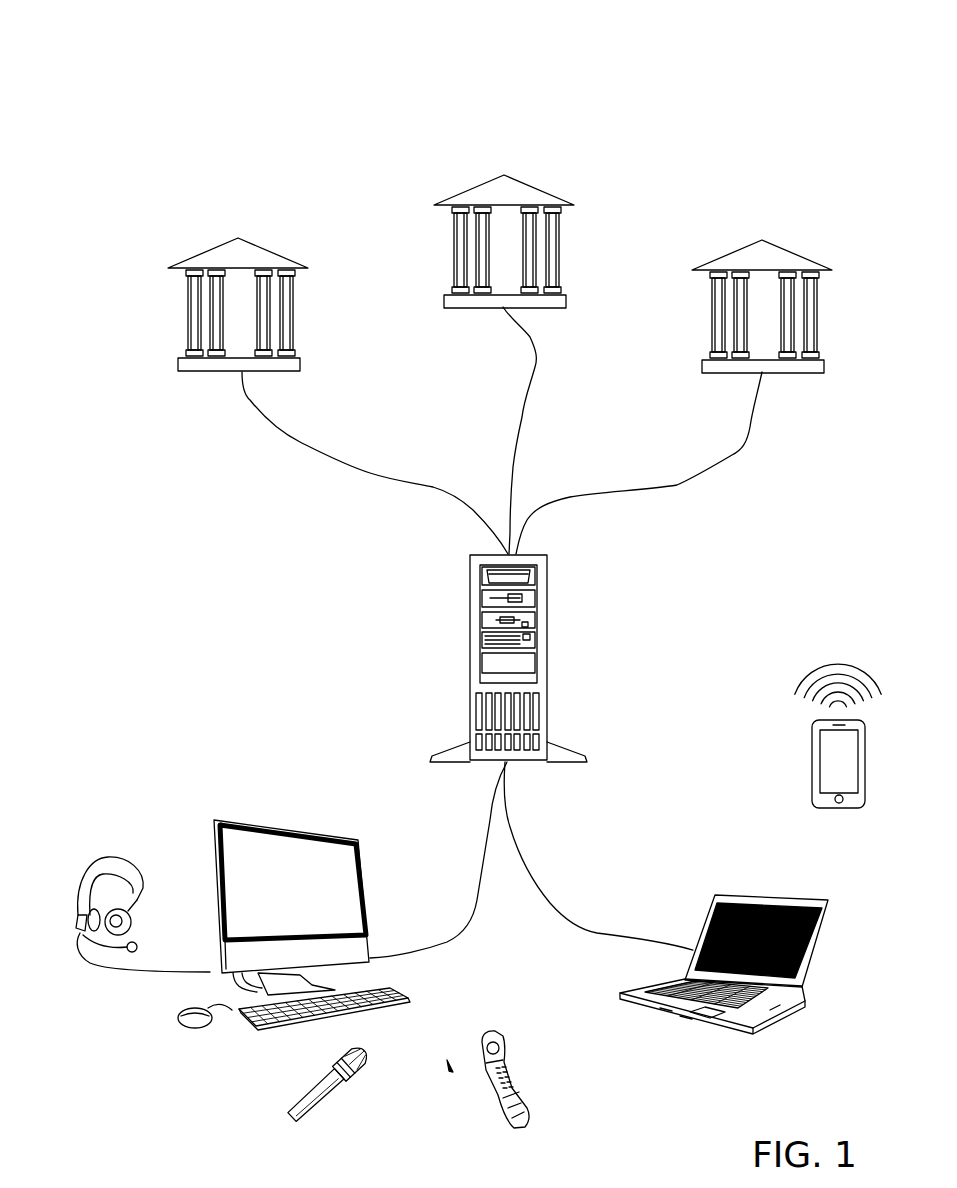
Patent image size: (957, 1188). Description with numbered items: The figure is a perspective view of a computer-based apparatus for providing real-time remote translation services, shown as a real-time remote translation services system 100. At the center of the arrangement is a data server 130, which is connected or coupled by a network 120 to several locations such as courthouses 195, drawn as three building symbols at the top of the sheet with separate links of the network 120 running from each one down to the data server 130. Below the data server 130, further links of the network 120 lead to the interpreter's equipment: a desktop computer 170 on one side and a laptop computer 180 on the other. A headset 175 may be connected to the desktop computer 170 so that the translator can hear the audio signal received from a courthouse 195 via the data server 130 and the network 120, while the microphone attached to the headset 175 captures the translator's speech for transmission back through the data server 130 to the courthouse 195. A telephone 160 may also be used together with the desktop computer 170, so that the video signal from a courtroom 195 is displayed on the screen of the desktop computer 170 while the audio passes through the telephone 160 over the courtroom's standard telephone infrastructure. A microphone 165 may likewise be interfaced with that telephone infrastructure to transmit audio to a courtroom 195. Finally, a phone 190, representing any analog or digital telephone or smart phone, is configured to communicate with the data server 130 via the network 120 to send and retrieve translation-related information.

The real-time remote translation services system 100 is at (180, 41).
The network 120 is at (300, 441).
The data server 130 is at (471, 556).
The telephone 160 is at (477, 1050).
The microphone 165 is at (318, 1084).
The desktop computer 170 is at (221, 818).
The headset 175 is at (84, 874).
The laptop computer 180 is at (823, 900).
The phone 190 is at (866, 770).
The courthouse 195 is at (208, 252).